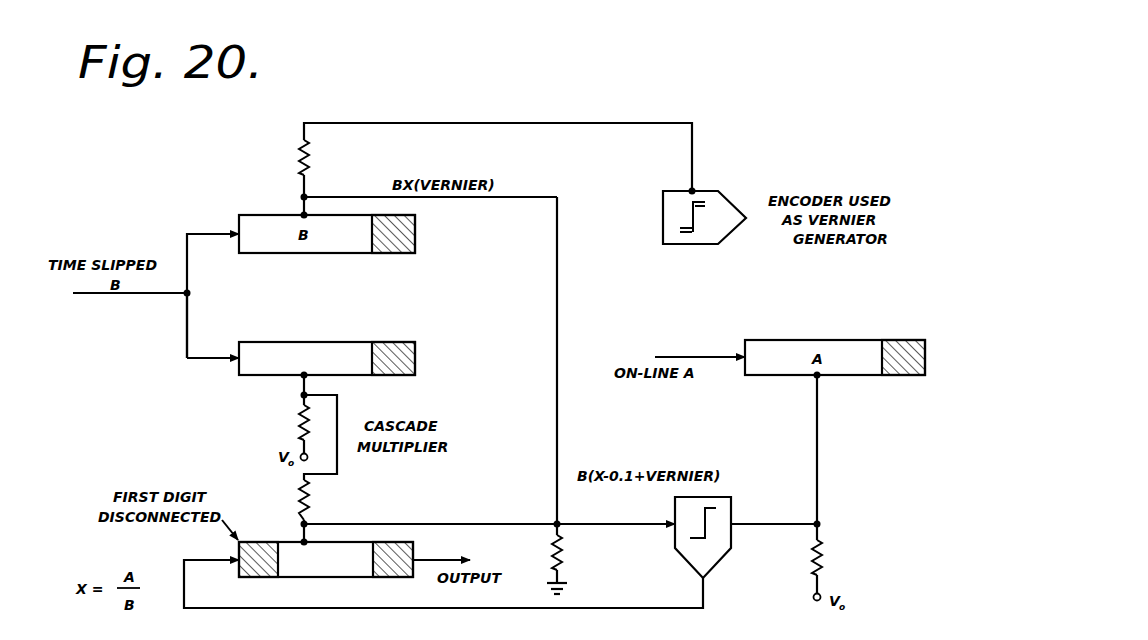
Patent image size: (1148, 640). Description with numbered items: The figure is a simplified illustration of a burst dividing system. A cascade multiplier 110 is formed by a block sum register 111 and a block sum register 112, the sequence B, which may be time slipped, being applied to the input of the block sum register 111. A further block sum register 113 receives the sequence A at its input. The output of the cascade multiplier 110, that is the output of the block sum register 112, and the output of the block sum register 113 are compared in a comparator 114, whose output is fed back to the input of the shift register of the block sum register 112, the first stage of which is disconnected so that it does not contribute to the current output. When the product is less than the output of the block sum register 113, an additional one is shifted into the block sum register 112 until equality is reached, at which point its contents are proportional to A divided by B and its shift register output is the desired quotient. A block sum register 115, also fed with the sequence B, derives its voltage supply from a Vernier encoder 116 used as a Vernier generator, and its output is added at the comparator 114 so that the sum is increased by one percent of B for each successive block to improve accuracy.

The cascade multiplier 110 is at (281, 429).
The block sum register 111 is at (263, 341).
The block sum register 112 is at (345, 578).
The block sum register 113 is at (867, 339).
The comparator 114 is at (720, 560).
The block sum register 115 is at (263, 214).
The Vernier encoder 116 is at (701, 246).